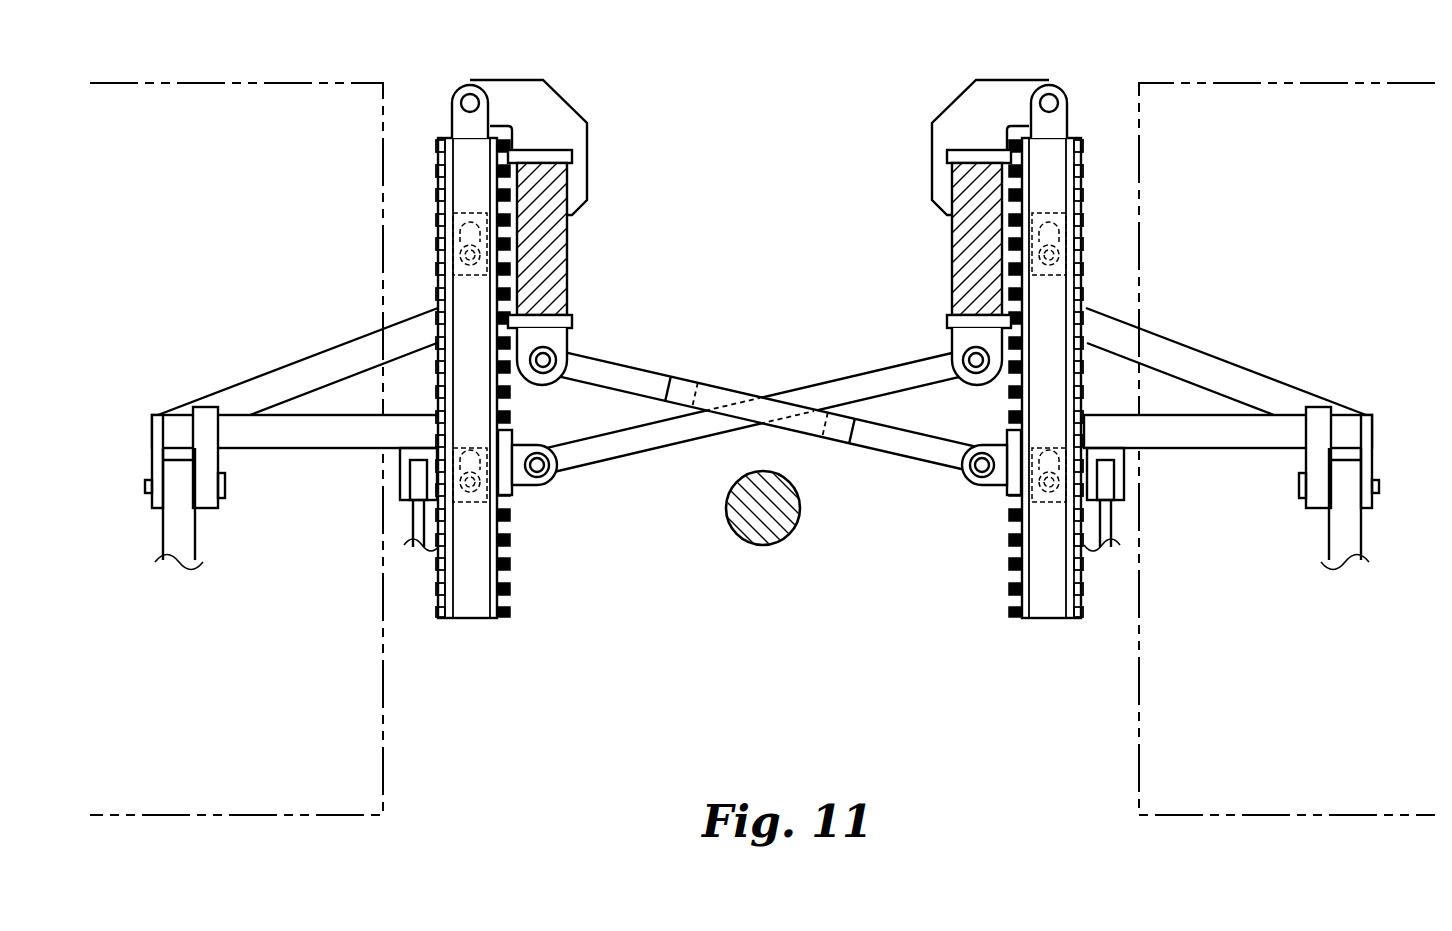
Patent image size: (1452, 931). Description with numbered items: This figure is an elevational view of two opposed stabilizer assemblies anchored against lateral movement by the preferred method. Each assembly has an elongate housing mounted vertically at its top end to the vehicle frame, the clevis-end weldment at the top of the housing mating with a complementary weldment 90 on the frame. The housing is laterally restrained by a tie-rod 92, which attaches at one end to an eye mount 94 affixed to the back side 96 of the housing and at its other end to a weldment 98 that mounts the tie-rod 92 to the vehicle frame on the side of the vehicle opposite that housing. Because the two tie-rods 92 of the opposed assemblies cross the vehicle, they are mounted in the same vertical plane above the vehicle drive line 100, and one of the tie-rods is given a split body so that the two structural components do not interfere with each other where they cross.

The weldment 90 is at (955, 110).
The tie-rod 92 is at (593, 452).
The eye mount 94 is at (1000, 478).
The back side of the housing 96 is at (1017, 545).
The weldment 98 is at (553, 352).
The vehicle drive line 100 is at (757, 518).